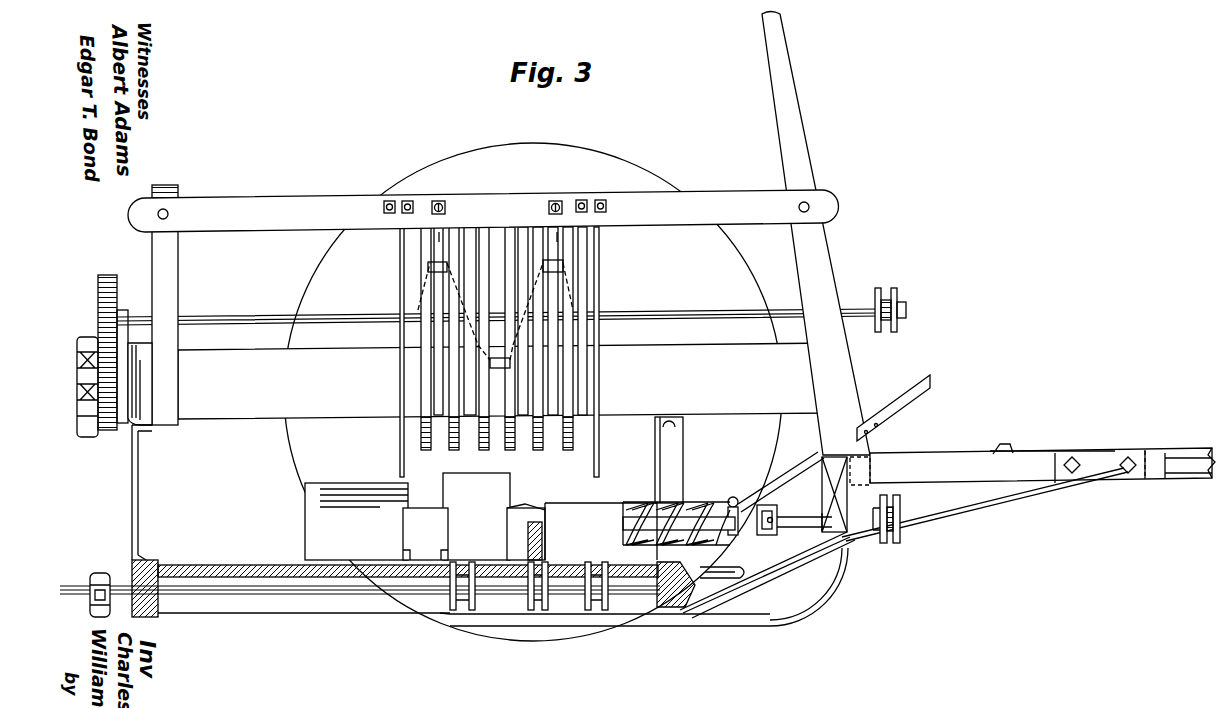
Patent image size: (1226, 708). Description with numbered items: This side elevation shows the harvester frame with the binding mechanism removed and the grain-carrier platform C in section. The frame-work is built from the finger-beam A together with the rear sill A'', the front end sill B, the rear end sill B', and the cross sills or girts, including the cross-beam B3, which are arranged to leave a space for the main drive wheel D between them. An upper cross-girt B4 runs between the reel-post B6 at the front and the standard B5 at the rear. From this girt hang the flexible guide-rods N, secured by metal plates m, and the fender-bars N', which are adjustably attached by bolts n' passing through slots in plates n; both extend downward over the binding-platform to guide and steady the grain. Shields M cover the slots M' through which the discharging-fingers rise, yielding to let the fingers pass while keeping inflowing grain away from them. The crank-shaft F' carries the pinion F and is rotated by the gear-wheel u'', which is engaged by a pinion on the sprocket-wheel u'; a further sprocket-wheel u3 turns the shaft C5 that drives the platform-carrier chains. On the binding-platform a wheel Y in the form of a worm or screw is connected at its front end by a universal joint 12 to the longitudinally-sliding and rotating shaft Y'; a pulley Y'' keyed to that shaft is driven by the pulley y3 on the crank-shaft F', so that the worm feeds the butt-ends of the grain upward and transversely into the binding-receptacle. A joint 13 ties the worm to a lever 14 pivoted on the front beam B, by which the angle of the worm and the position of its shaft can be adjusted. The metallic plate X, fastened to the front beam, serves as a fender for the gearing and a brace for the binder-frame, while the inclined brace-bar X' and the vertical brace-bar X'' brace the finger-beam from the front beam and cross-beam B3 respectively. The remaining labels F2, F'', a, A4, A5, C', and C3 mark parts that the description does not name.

The main or drive wheel D is at (533, 392).
The cross sill or girt B3 is at (505, 381).
The upper cross-girt B4 is at (483, 211).
The standard B5 is at (164, 305).
The reel-post B6 is at (816, 234).
The rear end sill B' is at (134, 367).
The front end sill B is at (1018, 488).
The metal plates m is at (493, 211).
The plates n is at (498, 233).
The bolts n' is at (497, 195).
The guide-rods N is at (491, 338).
The fender-bars N' is at (499, 352).
The pinion F is at (543, 295).
The frame F2 is at (448, 296).
The crank-shaft F' is at (497, 308).
The frame bottom F'' is at (495, 365).
The pulley y3 is at (897, 310).
The lever 14 is at (893, 408).
The joint 13 is at (733, 497).
The universal joint 12 is at (769, 512).
The wheel in the form of a worm or screw Y is at (679, 516).
The longitudinally-sliding and rotating shaft Y' is at (804, 515).
The pulley Y'' is at (898, 519).
The metallic plate X is at (784, 547).
The inclined brace-bar X' is at (767, 575).
The vertical brace-bar X'' is at (655, 460).
The pin a is at (735, 566).
The finger-beam A is at (677, 584).
The bottom rail A4 is at (304, 624).
The brace A5 is at (779, 503).
The rear sill A'' is at (145, 532).
The shields M is at (420, 516).
The slots M' is at (530, 522).
The grain-carrier platform C is at (408, 563).
The roller C' is at (568, 569).
The roller C3 is at (470, 562).
The shaft C5 is at (335, 594).
The sprocket-wheel u' is at (79, 387).
The gear-wheel u'' is at (120, 352).
The sprocket-wheel u3 is at (88, 595).